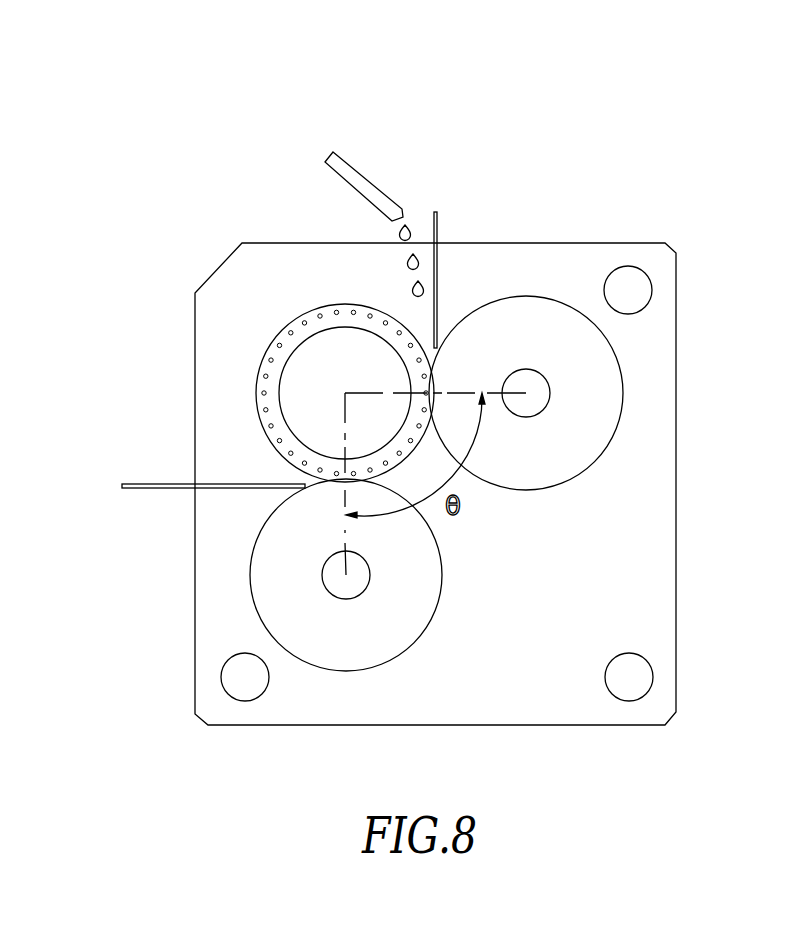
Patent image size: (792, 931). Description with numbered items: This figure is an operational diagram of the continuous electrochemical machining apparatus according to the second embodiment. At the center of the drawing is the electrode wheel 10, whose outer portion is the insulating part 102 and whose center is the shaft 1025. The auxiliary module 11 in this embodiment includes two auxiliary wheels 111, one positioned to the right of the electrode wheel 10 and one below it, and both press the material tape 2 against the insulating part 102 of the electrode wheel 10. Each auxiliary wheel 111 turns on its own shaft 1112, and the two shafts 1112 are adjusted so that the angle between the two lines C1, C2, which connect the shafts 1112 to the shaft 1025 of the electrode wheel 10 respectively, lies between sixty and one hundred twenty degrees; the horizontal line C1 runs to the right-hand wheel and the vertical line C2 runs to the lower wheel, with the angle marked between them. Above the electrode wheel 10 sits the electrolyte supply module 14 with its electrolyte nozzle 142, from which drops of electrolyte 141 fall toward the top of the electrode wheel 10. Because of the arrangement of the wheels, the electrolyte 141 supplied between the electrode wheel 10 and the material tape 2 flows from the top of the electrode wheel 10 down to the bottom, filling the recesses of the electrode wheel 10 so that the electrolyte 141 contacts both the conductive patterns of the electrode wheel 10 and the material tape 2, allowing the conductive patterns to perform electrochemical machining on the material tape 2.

The electrode wheel 10 is at (263, 323).
The insulating part 102 is at (273, 447).
The shaft of the electrode wheel 1025 is at (345, 393).
The auxiliary module 11 is at (233, 582).
The auxiliary wheel 111 is at (623, 390).
The shaft of the auxiliary wheel 1112 is at (526, 393).
The material tape 2 is at (163, 484).
The electrolyte supply module 14 is at (335, 133).
The electrolyte nozzle 142 is at (368, 175).
The electrolyte 141 is at (413, 233).
The line connecting the shafts C1 is at (383, 393).
The line connecting the shafts C2 is at (345, 532).